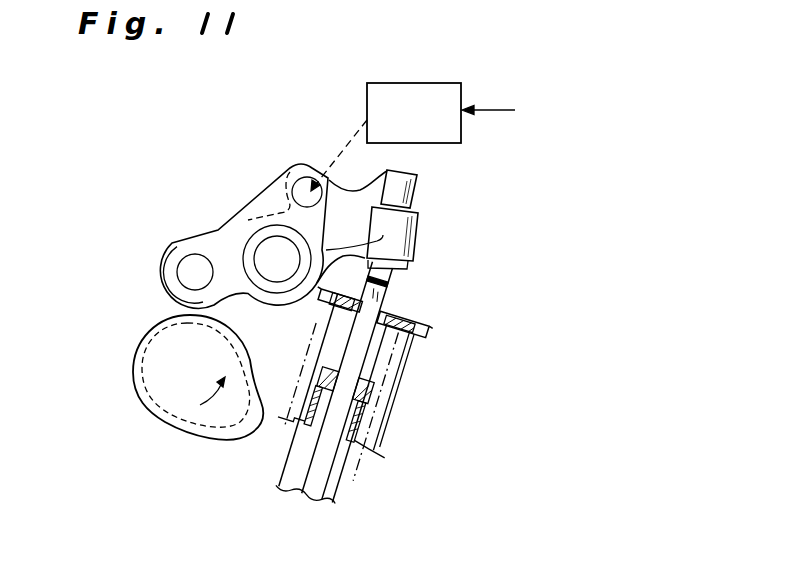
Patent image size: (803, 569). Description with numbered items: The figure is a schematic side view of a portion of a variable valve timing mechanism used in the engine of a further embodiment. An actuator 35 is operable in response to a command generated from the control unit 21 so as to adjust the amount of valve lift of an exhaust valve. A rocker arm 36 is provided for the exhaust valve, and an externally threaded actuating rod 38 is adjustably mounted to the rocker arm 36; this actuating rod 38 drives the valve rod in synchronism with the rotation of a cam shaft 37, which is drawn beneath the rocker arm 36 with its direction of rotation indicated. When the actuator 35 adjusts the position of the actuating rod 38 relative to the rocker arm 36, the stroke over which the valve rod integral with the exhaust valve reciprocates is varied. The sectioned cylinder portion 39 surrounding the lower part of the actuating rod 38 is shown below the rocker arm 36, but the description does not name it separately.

The control unit 21 is at (587, 110).
The actuator 35 is at (445, 144).
The rocker arm 36 is at (216, 228).
The cam shaft 37 is at (160, 387).
The actuating rod 38 is at (397, 274).
The cylinder 39 is at (362, 357).